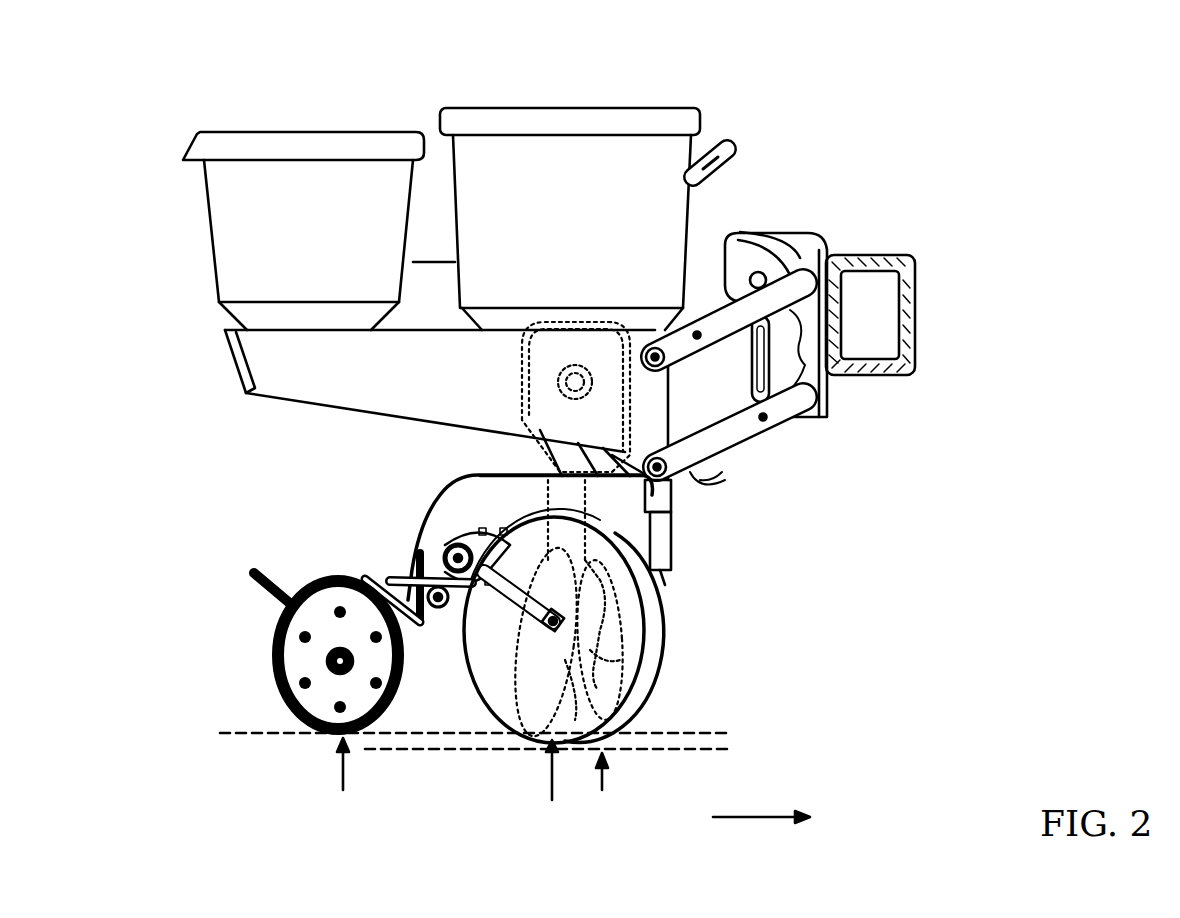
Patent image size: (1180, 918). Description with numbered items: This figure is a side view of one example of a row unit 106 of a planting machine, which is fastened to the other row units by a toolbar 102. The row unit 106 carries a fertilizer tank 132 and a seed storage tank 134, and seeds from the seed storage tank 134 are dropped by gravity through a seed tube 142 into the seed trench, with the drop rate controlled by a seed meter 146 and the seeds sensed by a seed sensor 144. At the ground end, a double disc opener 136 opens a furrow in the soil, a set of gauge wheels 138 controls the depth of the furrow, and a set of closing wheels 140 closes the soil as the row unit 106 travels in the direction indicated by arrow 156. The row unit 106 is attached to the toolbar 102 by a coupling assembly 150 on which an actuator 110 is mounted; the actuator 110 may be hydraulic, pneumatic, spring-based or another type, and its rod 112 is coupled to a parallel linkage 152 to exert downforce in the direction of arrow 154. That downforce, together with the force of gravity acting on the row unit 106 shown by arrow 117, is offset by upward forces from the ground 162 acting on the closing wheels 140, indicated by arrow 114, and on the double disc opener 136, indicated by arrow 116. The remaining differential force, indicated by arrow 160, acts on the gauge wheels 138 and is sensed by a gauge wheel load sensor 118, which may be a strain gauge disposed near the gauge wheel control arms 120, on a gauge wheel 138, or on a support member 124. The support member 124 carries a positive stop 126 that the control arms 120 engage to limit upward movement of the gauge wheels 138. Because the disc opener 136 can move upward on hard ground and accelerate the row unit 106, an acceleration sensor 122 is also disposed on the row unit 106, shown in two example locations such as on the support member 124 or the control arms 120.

The toolbar 102 is at (922, 330).
The row unit 106 is at (876, 91).
The actuator 110 is at (786, 231).
The rod 112 is at (772, 370).
The arrow indicating upward force on closing wheels 114 is at (343, 764).
The arrow indicating upward force on double disc opener 116 is at (602, 776).
The arrow indicating gravitational force 117 is at (490, 355).
The gauge wheel load sensor 118 is at (482, 530).
The gauge wheel control arms 120 is at (480, 640).
The acceleration sensor 122 is at (508, 545).
The support member 124 is at (408, 561).
The positive stop 126 is at (500, 528).
The fertilizer tank 132 is at (292, 105).
The seed storage tank 134 is at (590, 93).
The disc opener 136 is at (674, 700).
The gauge wheels 138 is at (487, 700).
The closing wheels 140 is at (300, 718).
The seed tube 142 is at (593, 655).
The seed sensor 144 is at (667, 586).
The seed meter 146 is at (622, 428).
The coupling assembly 150 is at (828, 258).
The parallel linkage 152 is at (772, 430).
The arrow indicating downforce 154 is at (771, 357).
The arrow indicating direction of travel 156 is at (755, 814).
The arrow indicating differential force 160 is at (552, 795).
The ground 162 is at (268, 728).